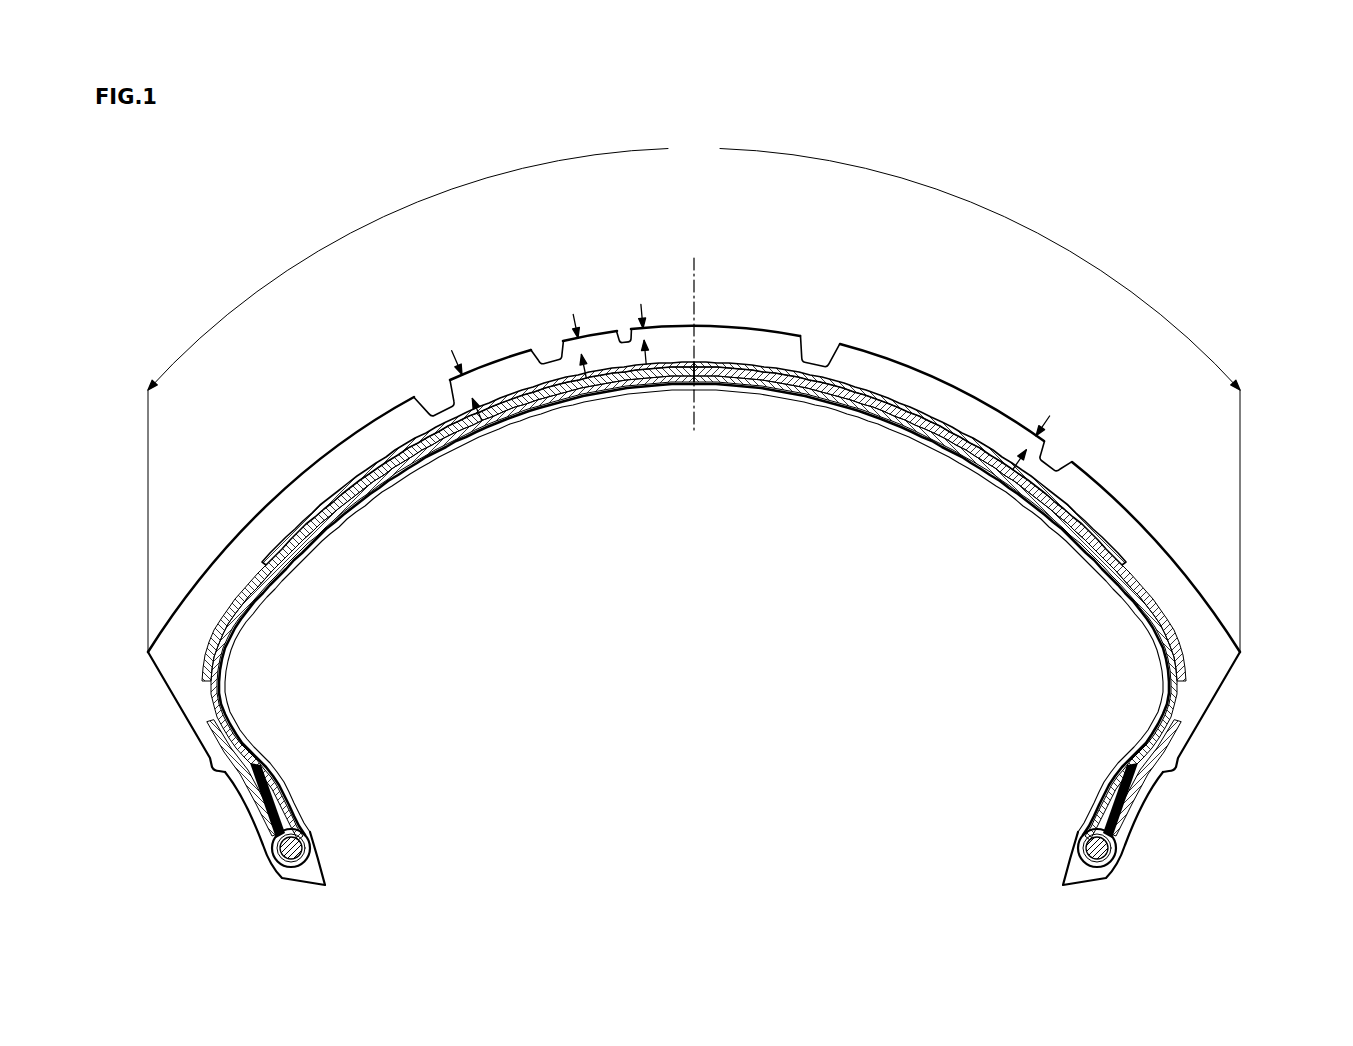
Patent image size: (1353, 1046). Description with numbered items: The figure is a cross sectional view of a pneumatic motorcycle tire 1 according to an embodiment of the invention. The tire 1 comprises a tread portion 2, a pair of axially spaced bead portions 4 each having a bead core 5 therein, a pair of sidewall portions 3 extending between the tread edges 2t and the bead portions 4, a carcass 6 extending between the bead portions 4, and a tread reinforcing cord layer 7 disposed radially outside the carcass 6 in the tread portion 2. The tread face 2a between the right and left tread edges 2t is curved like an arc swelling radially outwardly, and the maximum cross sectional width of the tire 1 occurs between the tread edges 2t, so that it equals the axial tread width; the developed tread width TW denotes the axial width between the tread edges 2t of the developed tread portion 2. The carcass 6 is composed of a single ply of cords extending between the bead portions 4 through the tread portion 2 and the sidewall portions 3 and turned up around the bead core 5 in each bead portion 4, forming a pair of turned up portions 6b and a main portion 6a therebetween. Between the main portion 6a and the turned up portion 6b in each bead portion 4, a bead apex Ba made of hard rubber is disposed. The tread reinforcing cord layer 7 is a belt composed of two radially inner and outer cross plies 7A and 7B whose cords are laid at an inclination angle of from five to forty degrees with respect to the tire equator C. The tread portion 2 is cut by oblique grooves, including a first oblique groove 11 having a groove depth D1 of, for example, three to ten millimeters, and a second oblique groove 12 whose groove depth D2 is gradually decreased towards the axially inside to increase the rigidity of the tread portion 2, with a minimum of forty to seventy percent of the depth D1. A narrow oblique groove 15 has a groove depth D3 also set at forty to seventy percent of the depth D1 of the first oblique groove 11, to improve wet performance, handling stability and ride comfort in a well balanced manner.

The pneumatic motorcycle tire 1 is at (690, 528).
The tread portion 2 is at (690, 439).
The tread face 2a is at (1122, 498).
The tread edges 2t is at (1241, 650).
The sidewall portions 3 is at (1190, 772).
The bead portions 4 is at (693, 824).
The bead core 5 is at (1088, 857).
The carcass 6 is at (668, 621).
The main portion 6a is at (1172, 691).
The turned up portions 6b is at (1160, 742).
The tread reinforcing cord layer 7 is at (694, 521).
The inner cross ply 7A is at (334, 514).
The outer cross ply 7B is at (386, 478).
The first oblique groove 11 is at (818, 340).
The second oblique groove 12 is at (1060, 462).
The narrow oblique groove 15 is at (624, 330).
The bead apex Ba is at (1112, 807).
The tire equator C is at (693, 356).
The groove depth of first oblique groove D1 is at (455, 357).
The groove depth of second oblique groove D2 is at (1045, 420).
The groove depth of narrow oblique groove D3 is at (644, 328).
The developed tread width TW is at (694, 261).